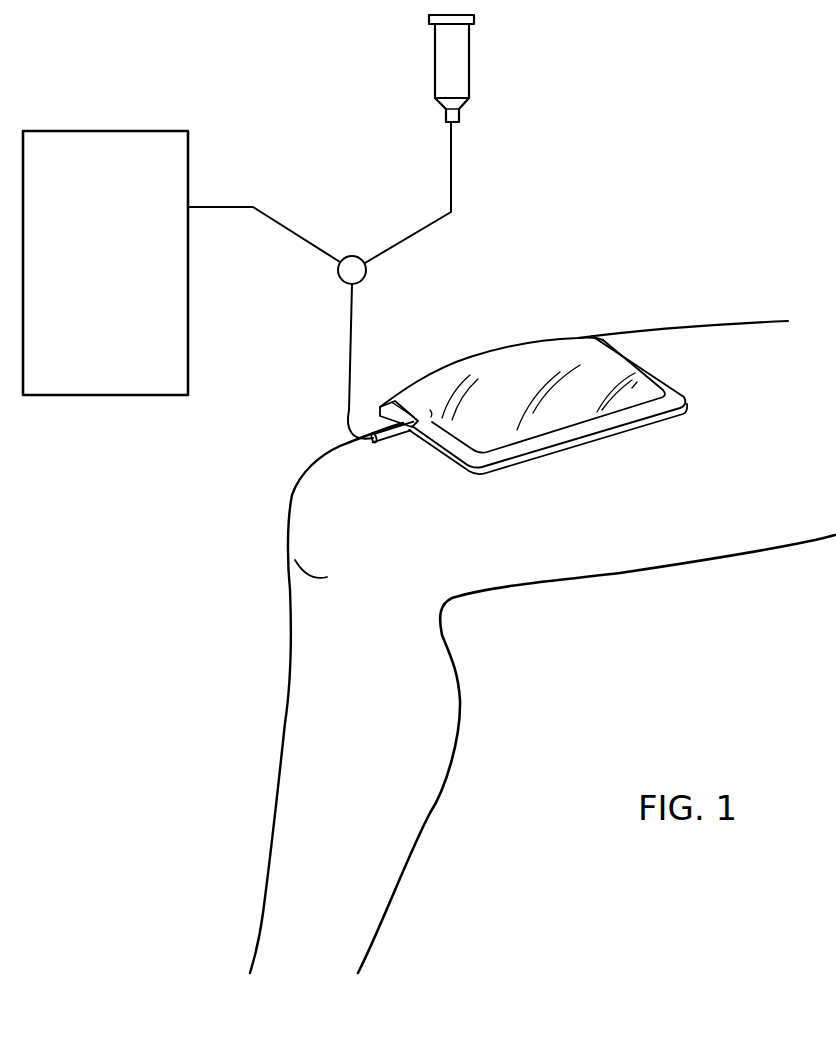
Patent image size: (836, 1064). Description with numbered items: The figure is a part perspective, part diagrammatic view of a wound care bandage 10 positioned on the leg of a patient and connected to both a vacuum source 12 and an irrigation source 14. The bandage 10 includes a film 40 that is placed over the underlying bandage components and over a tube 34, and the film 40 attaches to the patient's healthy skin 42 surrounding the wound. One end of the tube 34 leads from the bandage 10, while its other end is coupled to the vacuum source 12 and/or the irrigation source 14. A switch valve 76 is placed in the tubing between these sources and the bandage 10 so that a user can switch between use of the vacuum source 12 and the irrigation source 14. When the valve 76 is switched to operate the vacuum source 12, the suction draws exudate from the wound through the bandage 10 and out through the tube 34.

The wound care bandage 10 is at (582, 302).
The vacuum source 12 is at (101, 131).
The irrigation source 14 is at (472, 62).
The tube 34 is at (393, 440).
The film 40 is at (523, 352).
The healthy skin 42 is at (697, 327).
The switch valve 76 is at (345, 257).